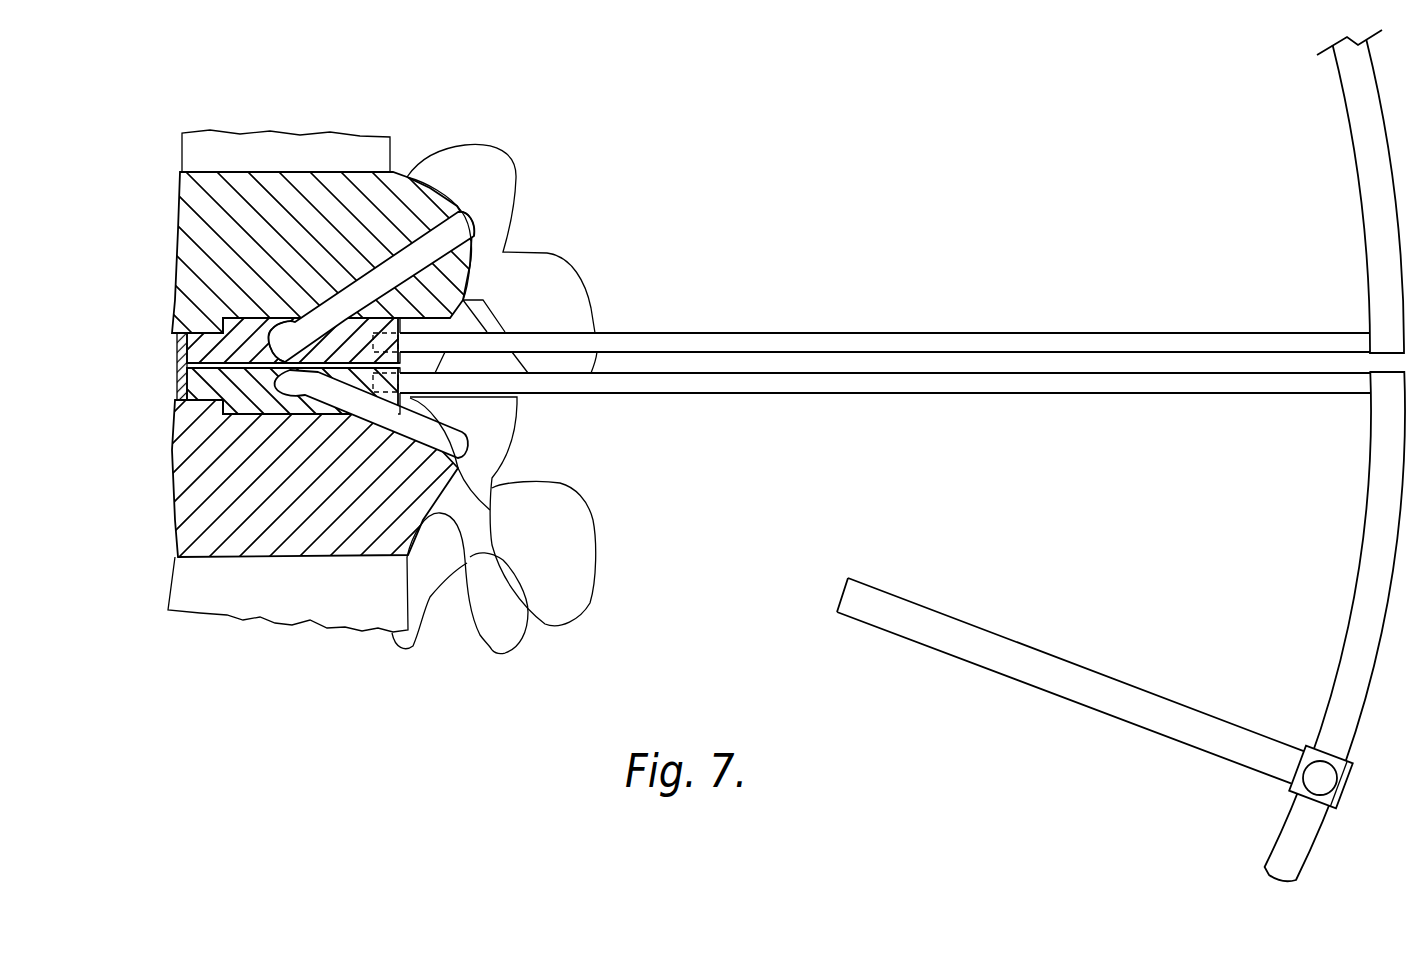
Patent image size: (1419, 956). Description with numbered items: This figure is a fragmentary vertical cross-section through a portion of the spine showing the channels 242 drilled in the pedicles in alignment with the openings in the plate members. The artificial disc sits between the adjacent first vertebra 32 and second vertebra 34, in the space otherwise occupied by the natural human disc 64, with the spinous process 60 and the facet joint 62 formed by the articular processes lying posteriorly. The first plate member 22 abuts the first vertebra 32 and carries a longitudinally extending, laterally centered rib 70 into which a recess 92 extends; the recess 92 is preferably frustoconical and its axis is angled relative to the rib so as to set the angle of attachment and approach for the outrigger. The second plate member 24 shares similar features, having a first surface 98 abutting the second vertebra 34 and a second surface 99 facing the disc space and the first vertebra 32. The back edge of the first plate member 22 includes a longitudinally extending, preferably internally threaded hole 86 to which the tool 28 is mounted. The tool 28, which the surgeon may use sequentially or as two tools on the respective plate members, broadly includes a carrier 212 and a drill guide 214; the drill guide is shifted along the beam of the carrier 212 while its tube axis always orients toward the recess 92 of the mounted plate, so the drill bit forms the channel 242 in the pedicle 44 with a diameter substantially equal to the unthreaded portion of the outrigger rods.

The first plate member 22 is at (423, 338).
The second plate member 24 is at (263, 408).
The tool 28 is at (759, 328).
The first vertebra 32 is at (187, 225).
The second vertebra 34 is at (180, 482).
The left pedicle 44 is at (448, 200).
The spinous process 60 is at (580, 283).
The facet joint 62 is at (507, 633).
The natural human disc 64 is at (180, 378).
The rib 70 is at (225, 330).
The hole 86 is at (413, 333).
The recess 92 is at (281, 332).
The first surface 98 is at (203, 402).
The second surface 99 is at (235, 365).
The carrier 212 is at (963, 333).
The drill guide 214 is at (1033, 650).
The channel 242 is at (407, 247).